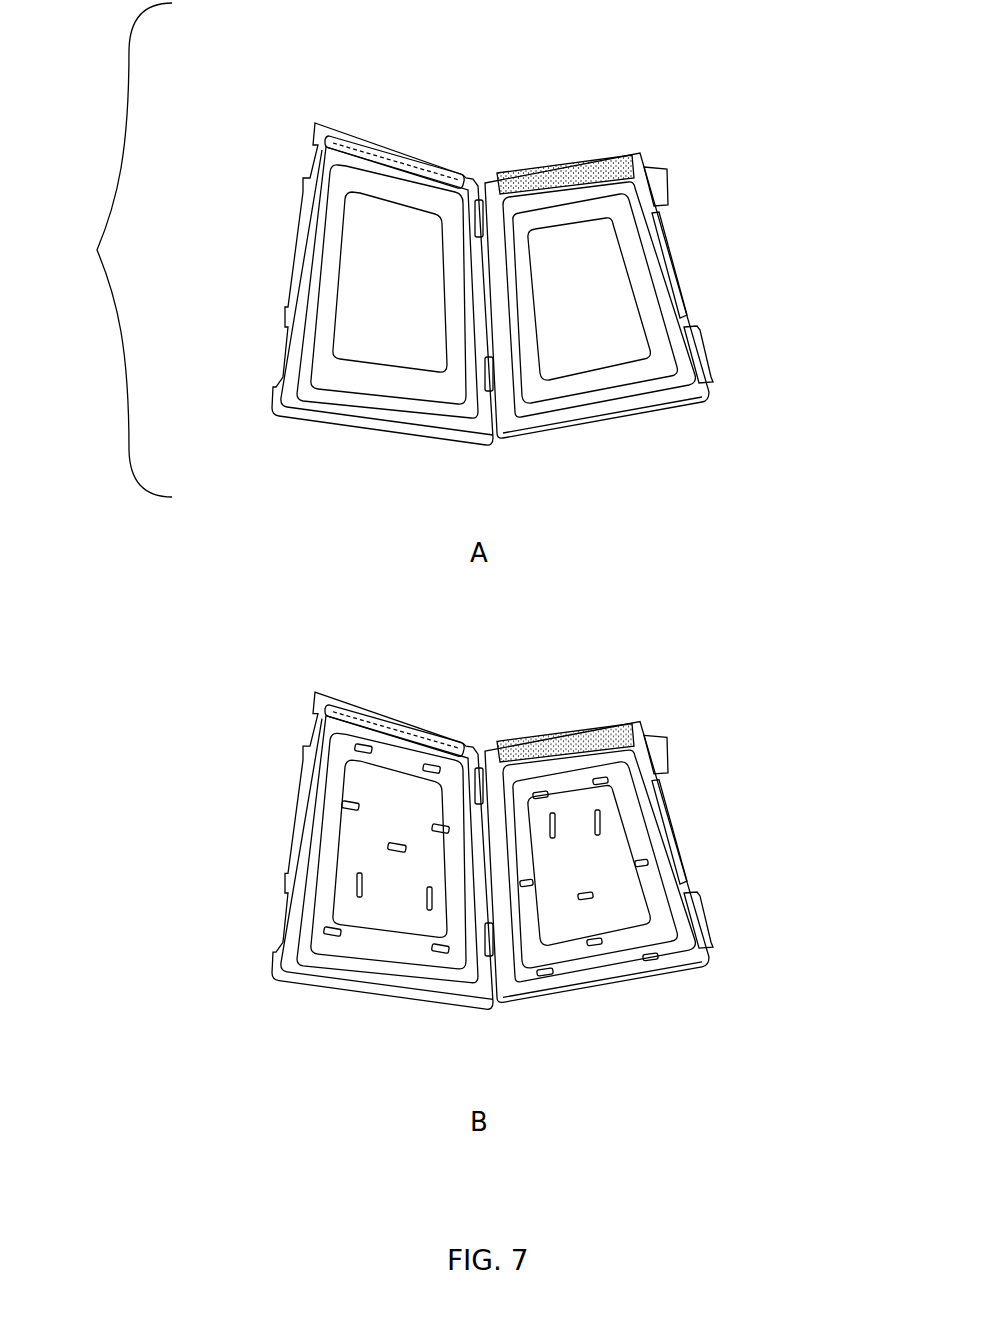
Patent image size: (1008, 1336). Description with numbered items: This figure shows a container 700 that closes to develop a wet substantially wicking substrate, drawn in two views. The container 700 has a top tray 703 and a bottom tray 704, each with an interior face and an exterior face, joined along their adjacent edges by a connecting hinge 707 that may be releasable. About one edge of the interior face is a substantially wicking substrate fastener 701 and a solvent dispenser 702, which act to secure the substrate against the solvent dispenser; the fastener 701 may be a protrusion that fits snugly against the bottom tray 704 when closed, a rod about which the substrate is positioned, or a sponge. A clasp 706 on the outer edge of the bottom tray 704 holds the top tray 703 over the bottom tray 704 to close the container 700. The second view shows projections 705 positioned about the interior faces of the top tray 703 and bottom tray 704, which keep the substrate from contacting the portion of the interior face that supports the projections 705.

The container 700 is at (111, 250).
The substantially wicking substrate fastener 701 is at (375, 150).
The solvent dispenser 702 is at (605, 160).
The top tray 703 is at (293, 242).
The bottom tray 704 is at (662, 268).
The projections 705 is at (356, 882).
The clasp 706 is at (662, 183).
The connecting hinge 707 is at (488, 182).